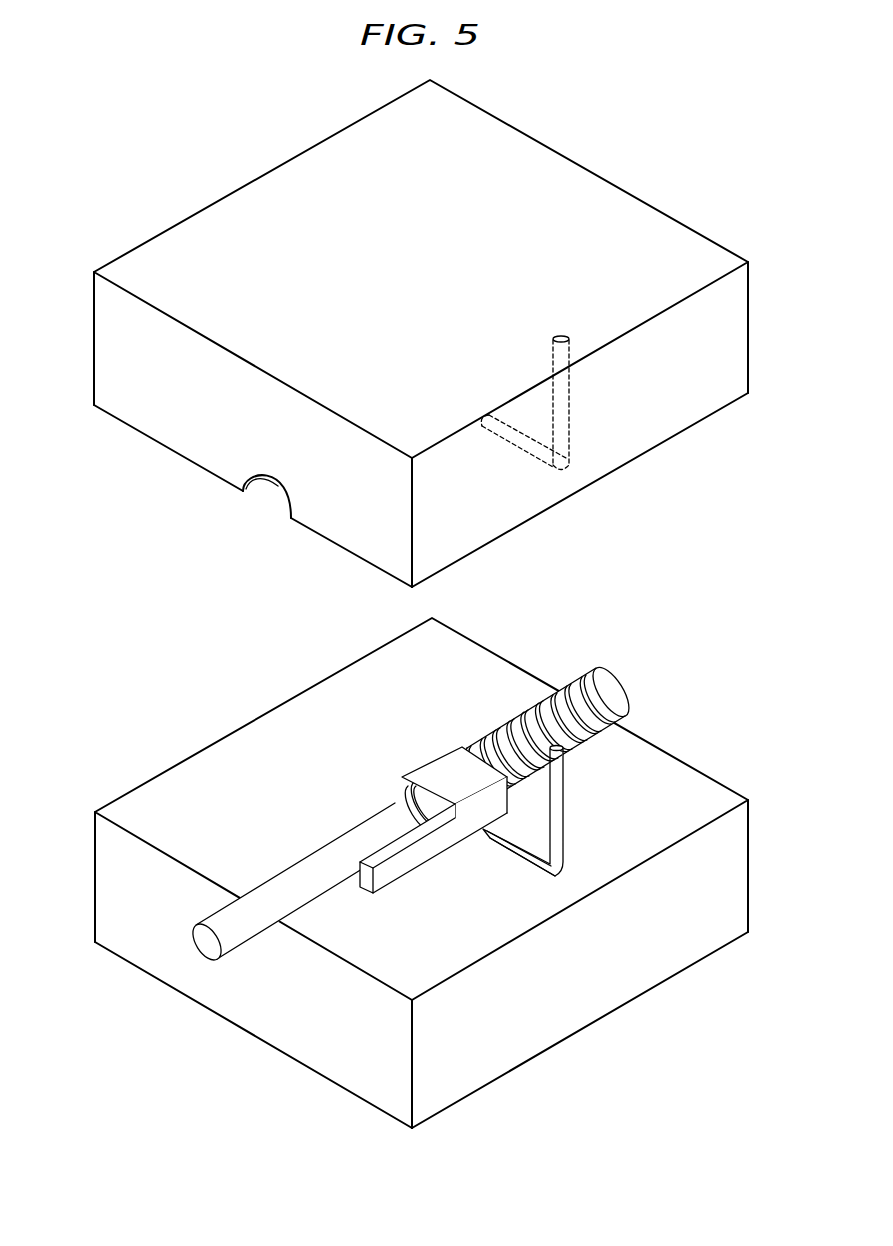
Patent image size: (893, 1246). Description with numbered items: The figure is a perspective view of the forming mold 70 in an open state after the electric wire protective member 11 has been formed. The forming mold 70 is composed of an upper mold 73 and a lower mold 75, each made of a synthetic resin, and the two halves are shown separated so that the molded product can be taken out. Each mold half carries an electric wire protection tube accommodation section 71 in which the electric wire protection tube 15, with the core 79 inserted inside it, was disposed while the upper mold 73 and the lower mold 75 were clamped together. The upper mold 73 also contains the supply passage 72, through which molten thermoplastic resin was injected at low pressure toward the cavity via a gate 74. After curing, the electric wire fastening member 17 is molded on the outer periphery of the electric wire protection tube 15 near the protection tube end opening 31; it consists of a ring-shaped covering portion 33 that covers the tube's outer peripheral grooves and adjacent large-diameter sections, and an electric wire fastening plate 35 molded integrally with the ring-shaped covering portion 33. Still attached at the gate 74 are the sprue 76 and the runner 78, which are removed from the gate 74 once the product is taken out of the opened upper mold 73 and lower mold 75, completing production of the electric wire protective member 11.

The electric wire protective member 11 is at (448, 843).
The electric wire protection tube 15 is at (633, 681).
The electric wire fastening member 17 is at (347, 888).
The protection tube end opening 31 is at (410, 808).
The ring-shaped covering portion 33 is at (455, 772).
The electric wire fastening plate 35 is at (412, 850).
The forming mold 70 is at (401, 604).
The electric wire protection tube accommodation section 71 is at (282, 495).
The supply passage 72 is at (564, 334).
The upper mold 73 is at (421, 395).
The gate 74 is at (530, 853).
The lower mold 75 is at (162, 760).
The sprue 76 is at (578, 867).
The runner 78 is at (540, 866).
The core 79 is at (251, 952).